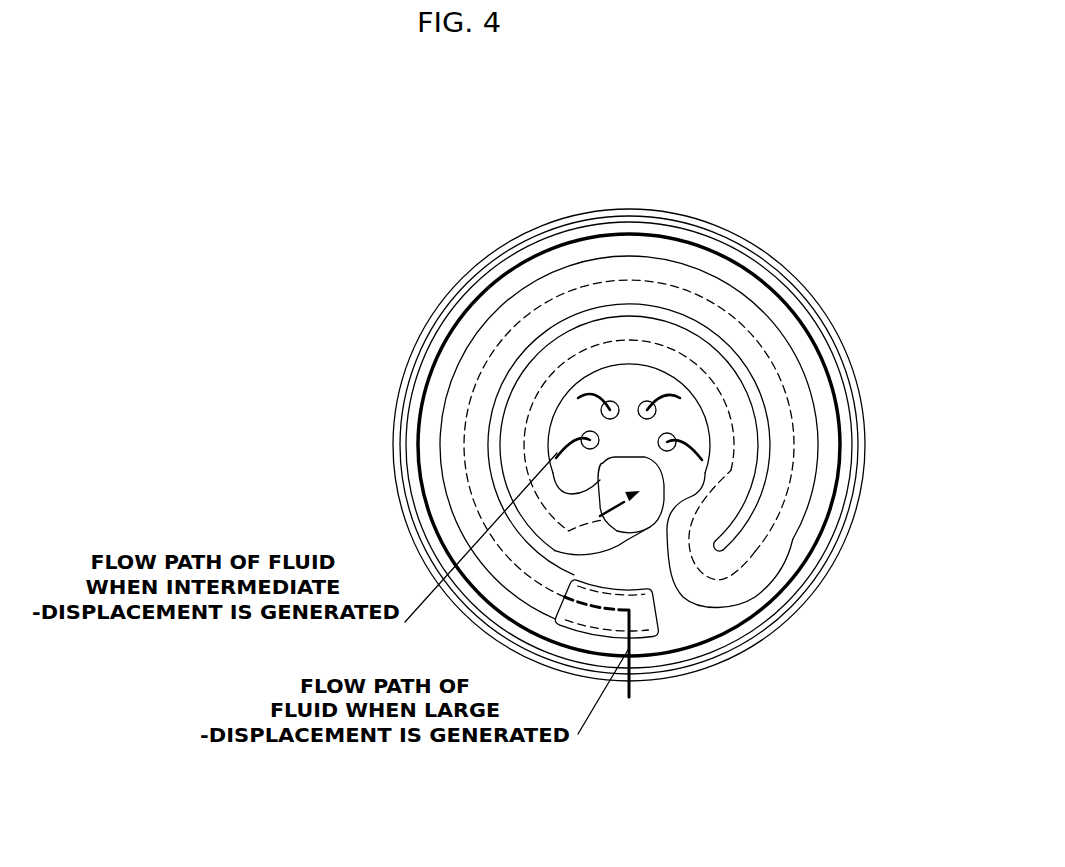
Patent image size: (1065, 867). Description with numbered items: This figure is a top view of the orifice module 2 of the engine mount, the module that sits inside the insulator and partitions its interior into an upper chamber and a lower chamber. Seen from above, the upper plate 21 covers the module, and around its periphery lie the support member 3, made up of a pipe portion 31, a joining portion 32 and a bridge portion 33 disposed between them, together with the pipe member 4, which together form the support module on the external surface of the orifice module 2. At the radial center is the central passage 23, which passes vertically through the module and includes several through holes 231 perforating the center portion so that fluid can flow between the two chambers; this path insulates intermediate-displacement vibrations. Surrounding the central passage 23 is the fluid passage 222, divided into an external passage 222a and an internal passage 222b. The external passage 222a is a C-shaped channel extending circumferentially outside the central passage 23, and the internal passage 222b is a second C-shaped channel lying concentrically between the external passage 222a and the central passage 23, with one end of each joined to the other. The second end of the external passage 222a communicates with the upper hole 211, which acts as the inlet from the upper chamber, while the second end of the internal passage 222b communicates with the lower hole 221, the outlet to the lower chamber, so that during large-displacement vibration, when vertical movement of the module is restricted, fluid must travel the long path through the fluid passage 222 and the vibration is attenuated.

The orifice module 2 is at (426, 349).
The upper plate 21 is at (481, 307).
The upper hole 211 is at (643, 617).
The lower hole 221 is at (655, 500).
The fluid passage 222 is at (560, 166).
The external passage 222a is at (595, 258).
The internal passage 222b is at (611, 316).
The central passage 23 is at (645, 374).
The through hole 231 is at (656, 410).
The support member 3 is at (325, 380).
The pipe portion 31 is at (408, 402).
The joining portion 32 is at (414, 474).
The bridge portion 33 is at (407, 443).
The pipe member 4 is at (867, 454).